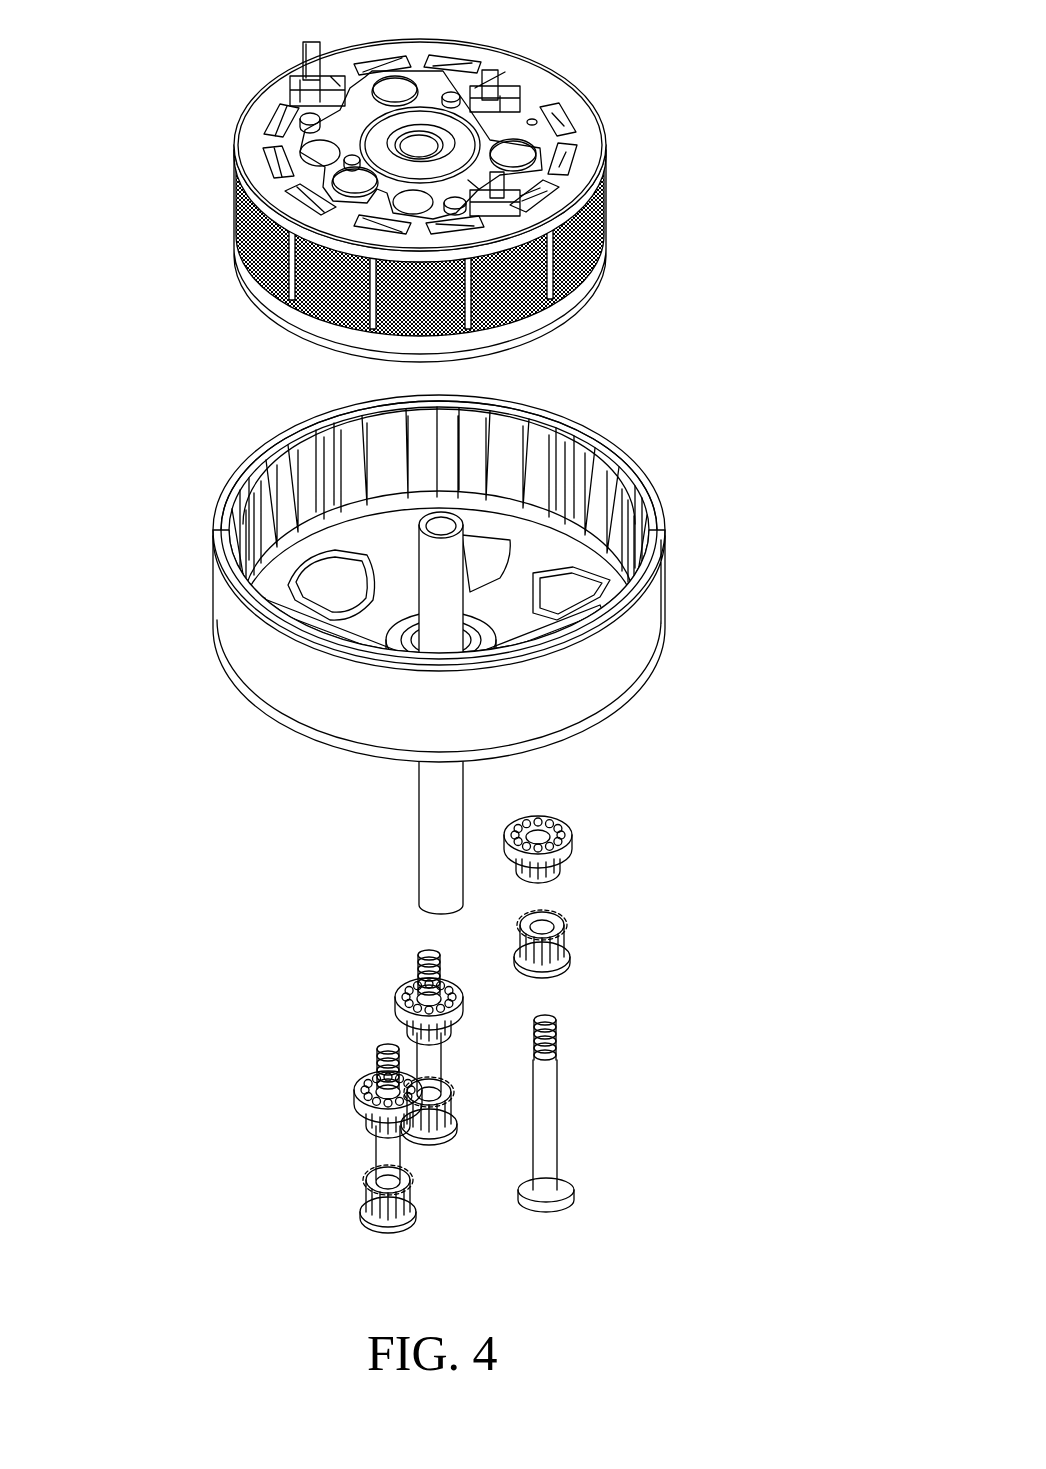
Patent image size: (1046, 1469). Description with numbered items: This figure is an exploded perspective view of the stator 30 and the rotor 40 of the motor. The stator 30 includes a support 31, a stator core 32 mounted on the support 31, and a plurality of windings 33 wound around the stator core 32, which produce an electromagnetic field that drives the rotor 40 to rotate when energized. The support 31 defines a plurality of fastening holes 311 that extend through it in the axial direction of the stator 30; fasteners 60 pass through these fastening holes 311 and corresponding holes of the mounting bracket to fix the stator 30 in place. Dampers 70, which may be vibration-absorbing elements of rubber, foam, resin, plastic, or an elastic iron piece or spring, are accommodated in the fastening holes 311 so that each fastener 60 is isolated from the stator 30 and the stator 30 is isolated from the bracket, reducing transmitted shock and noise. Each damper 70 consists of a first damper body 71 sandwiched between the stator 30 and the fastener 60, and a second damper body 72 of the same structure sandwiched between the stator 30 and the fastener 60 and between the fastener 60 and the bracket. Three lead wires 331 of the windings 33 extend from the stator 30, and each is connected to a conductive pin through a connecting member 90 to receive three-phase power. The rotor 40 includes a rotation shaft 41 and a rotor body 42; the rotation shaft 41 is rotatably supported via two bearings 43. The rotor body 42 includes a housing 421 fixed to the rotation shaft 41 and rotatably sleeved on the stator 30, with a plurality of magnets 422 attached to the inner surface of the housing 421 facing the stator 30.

The stator 30 is at (399, 181).
The support 31 is at (476, 109).
The fastening holes 311 is at (403, 88).
The stator core 32 is at (610, 200).
The windings 33 is at (431, 150).
The lead wires 331 is at (300, 128).
The connecting member 90 is at (308, 47).
The rotor 40 is at (488, 645).
The rotation shaft 41 is at (443, 557).
The rotor body 42 is at (517, 645).
The housing 421 is at (640, 628).
The magnets 422 is at (640, 530).
The bearings 43 is at (480, 643).
The dampers 70 is at (613, 897).
The first damper body 71 is at (587, 944).
The second damper body 72 is at (573, 852).
The fasteners 60 is at (550, 1140).